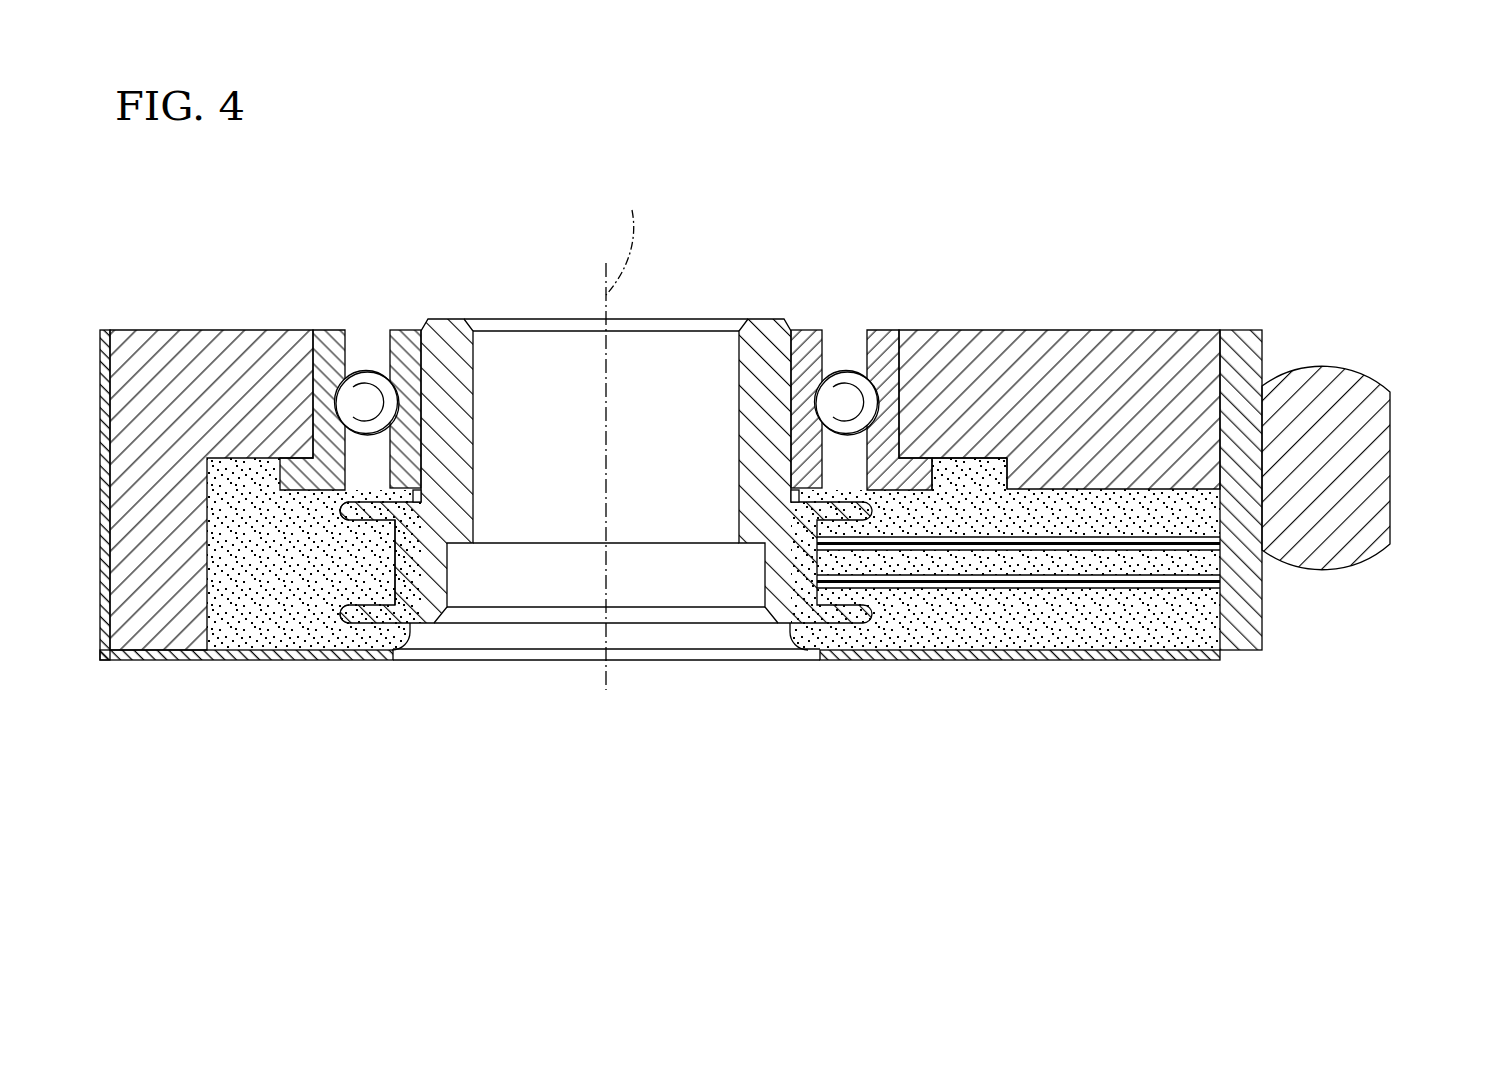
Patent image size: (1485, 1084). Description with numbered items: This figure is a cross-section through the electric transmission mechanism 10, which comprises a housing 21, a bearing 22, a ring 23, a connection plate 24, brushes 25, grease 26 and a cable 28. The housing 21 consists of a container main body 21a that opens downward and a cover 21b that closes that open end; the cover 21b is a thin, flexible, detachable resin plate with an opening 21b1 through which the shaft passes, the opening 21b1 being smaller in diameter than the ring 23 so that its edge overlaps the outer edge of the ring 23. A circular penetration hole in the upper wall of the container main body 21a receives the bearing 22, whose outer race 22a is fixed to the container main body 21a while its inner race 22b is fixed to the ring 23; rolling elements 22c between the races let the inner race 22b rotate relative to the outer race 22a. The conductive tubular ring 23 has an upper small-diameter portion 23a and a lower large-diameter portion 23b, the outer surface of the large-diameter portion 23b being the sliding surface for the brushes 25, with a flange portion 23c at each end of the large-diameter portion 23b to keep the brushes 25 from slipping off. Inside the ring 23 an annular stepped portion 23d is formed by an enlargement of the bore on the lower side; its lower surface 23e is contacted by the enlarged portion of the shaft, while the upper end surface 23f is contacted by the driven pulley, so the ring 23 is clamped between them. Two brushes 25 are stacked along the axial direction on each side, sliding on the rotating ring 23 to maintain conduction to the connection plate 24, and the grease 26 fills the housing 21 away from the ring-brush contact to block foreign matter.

The electric transmission mechanism 10 is at (1258, 262).
The housing 21 is at (660, 507).
The container main body 21a is at (200, 348).
The cover 21b is at (238, 662).
The opening 21b1 is at (407, 662).
The bearing 22 is at (606, 332).
The outer race 22a is at (322, 335).
The inner race 22b is at (400, 335).
The rolling element 22c is at (385, 401).
The ring 23 is at (592, 489).
The small-diameter portion 23a is at (458, 372).
The large-diameter portion 23b is at (437, 577).
The flange portion 23c is at (347, 512).
The stepped portion 23d is at (734, 566).
The lower surface 23e is at (752, 546).
The upper end surface 23f is at (765, 318).
The connection plate 24 is at (1253, 368).
The brush 25 is at (1070, 561).
The grease 26 is at (945, 633).
The cable 28 is at (1383, 455).